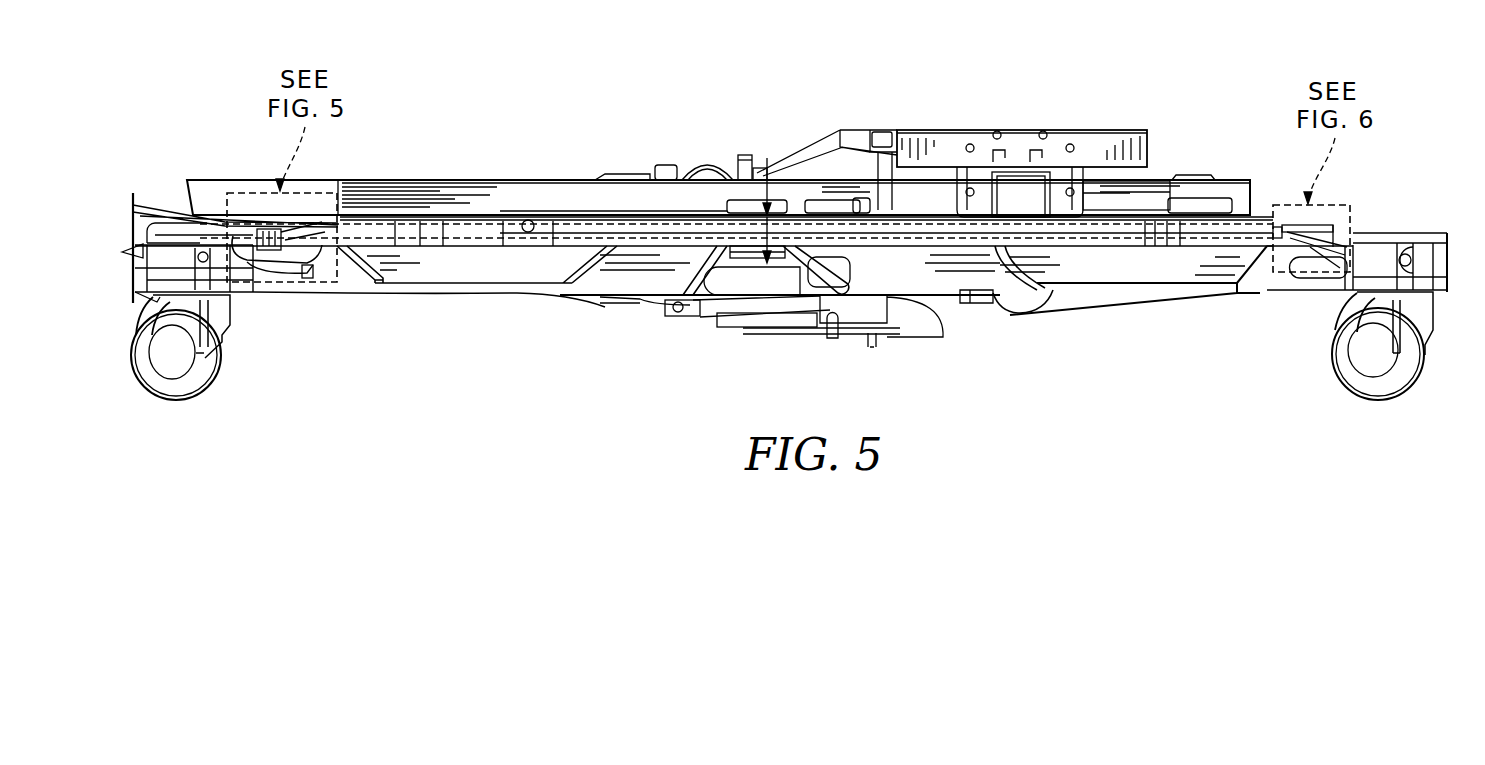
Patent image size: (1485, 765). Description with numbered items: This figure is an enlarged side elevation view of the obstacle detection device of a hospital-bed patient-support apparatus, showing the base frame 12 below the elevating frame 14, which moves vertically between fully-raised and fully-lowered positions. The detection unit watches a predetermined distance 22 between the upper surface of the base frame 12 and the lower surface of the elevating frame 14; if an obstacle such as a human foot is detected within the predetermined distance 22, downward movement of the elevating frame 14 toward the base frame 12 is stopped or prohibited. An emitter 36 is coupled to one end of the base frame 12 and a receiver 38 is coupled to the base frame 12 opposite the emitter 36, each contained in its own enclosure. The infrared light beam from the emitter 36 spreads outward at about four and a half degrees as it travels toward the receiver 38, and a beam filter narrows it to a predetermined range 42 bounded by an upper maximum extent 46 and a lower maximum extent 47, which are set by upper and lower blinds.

The base frame 12 is at (522, 293).
The elevating frame 14 is at (498, 180).
The predetermined distance 22 is at (745, 268).
The emitter 36 is at (303, 257).
The receiver 38 is at (1324, 246).
The predetermined range 42 is at (703, 231).
The upper maximum extent 46 is at (430, 227).
The lower maximum extent 47 is at (445, 237).